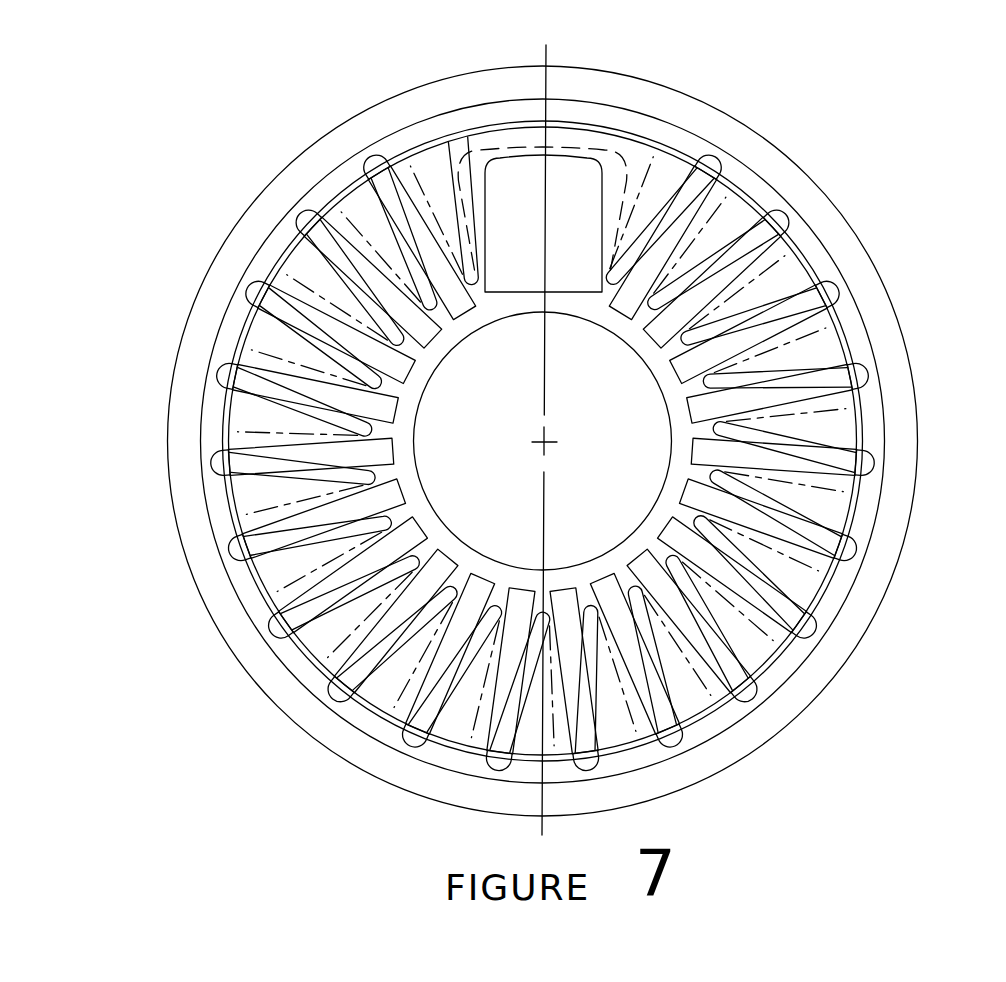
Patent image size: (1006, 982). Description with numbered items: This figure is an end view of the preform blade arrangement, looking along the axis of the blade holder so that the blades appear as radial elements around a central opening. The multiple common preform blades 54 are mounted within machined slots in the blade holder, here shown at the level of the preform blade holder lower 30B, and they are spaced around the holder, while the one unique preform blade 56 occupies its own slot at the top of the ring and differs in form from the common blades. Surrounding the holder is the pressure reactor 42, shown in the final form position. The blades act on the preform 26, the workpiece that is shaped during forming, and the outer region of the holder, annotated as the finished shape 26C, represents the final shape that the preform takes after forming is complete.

The preform 26 is at (541, 407).
The finished shape 26C is at (800, 630).
The preform blade holder lower 30B is at (421, 480).
The pressure reactor 42 is at (786, 152).
The preform blade-common 54 is at (258, 342).
The preform blade-unique 56 is at (592, 160).